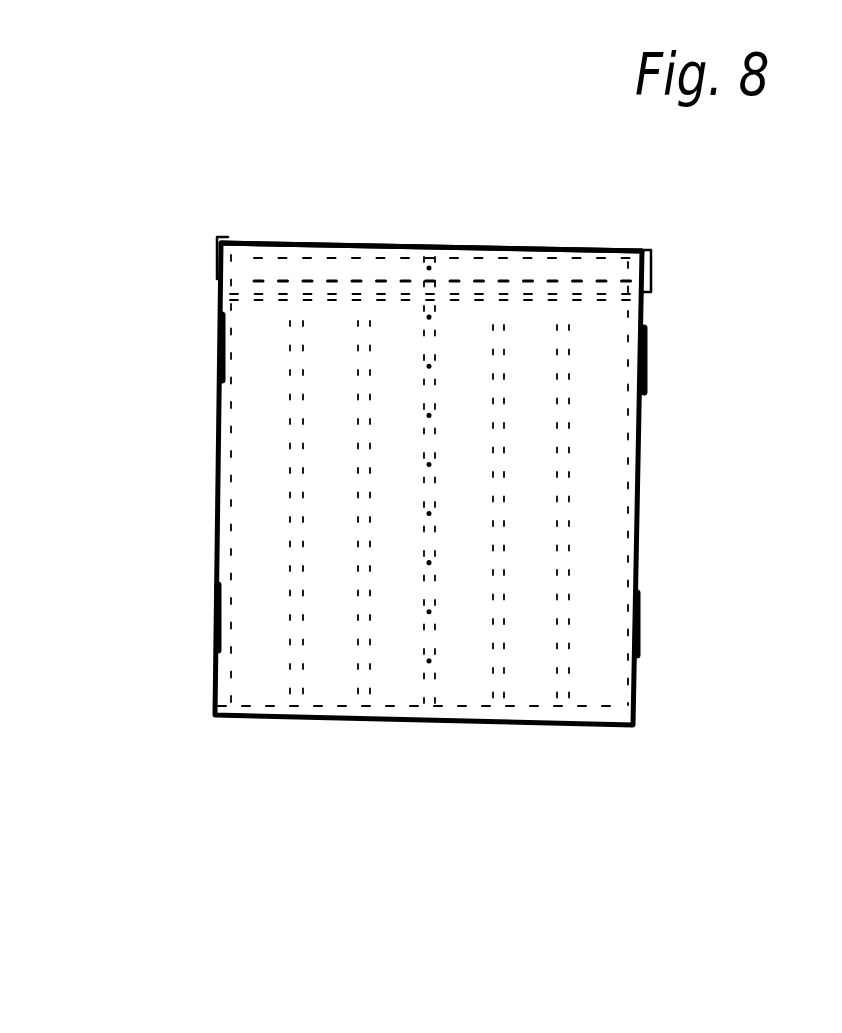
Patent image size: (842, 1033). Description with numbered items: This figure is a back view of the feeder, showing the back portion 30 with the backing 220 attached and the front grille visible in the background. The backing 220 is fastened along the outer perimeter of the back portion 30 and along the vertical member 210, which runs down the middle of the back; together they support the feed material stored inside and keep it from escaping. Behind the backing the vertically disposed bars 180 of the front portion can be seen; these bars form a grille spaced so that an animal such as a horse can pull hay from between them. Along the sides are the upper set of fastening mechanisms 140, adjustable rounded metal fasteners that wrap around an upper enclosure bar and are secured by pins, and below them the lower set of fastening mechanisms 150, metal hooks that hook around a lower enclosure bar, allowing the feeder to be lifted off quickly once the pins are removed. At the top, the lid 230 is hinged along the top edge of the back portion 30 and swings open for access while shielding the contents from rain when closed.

The back portion 30 is at (749, 307).
The upper set of fastening mechanisms 140 is at (222, 341).
The lower set of fastening mechanisms 150 is at (218, 617).
The vertically disposed bars 180 is at (482, 650).
The vertical member 210 is at (428, 371).
The backing 220 is at (587, 558).
The lid 230 is at (245, 272).